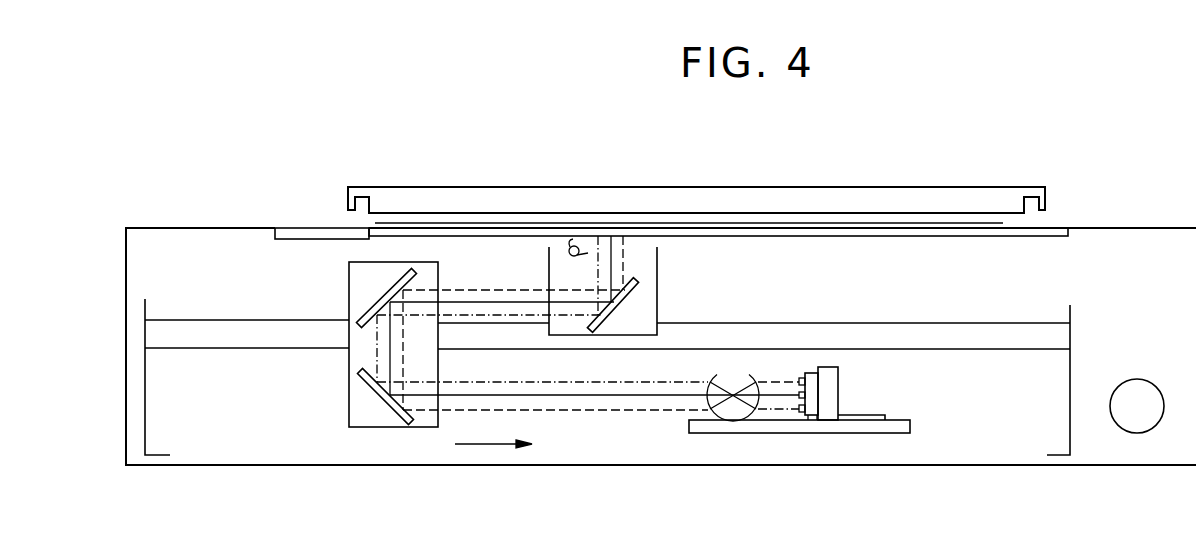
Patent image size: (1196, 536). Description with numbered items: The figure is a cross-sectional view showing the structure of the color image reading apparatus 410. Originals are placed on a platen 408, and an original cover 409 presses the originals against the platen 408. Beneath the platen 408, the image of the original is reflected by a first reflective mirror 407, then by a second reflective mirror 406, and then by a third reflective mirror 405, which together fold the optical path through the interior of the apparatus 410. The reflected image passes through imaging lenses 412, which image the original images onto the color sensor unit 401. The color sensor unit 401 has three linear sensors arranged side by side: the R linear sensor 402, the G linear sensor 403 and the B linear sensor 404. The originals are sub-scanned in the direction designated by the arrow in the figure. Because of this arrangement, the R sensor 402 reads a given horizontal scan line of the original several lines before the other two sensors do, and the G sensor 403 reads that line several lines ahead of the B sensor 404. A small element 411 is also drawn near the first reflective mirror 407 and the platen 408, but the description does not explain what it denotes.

The color sensor unit 401 is at (813, 420).
The R linear sensor 402 is at (822, 378).
The G linear sensor 403 is at (818, 393).
The B linear sensor 404 is at (840, 415).
The third reflective mirror 405 is at (378, 402).
The second reflective mirror 406 is at (385, 291).
The first reflective mirror 407 is at (630, 297).
The platen 408 is at (817, 237).
The original cover 409 is at (918, 187).
The color image reading apparatus 410 is at (1141, 228).
The pivot pin 411 is at (571, 245).
The imaging lenses 412 is at (733, 410).